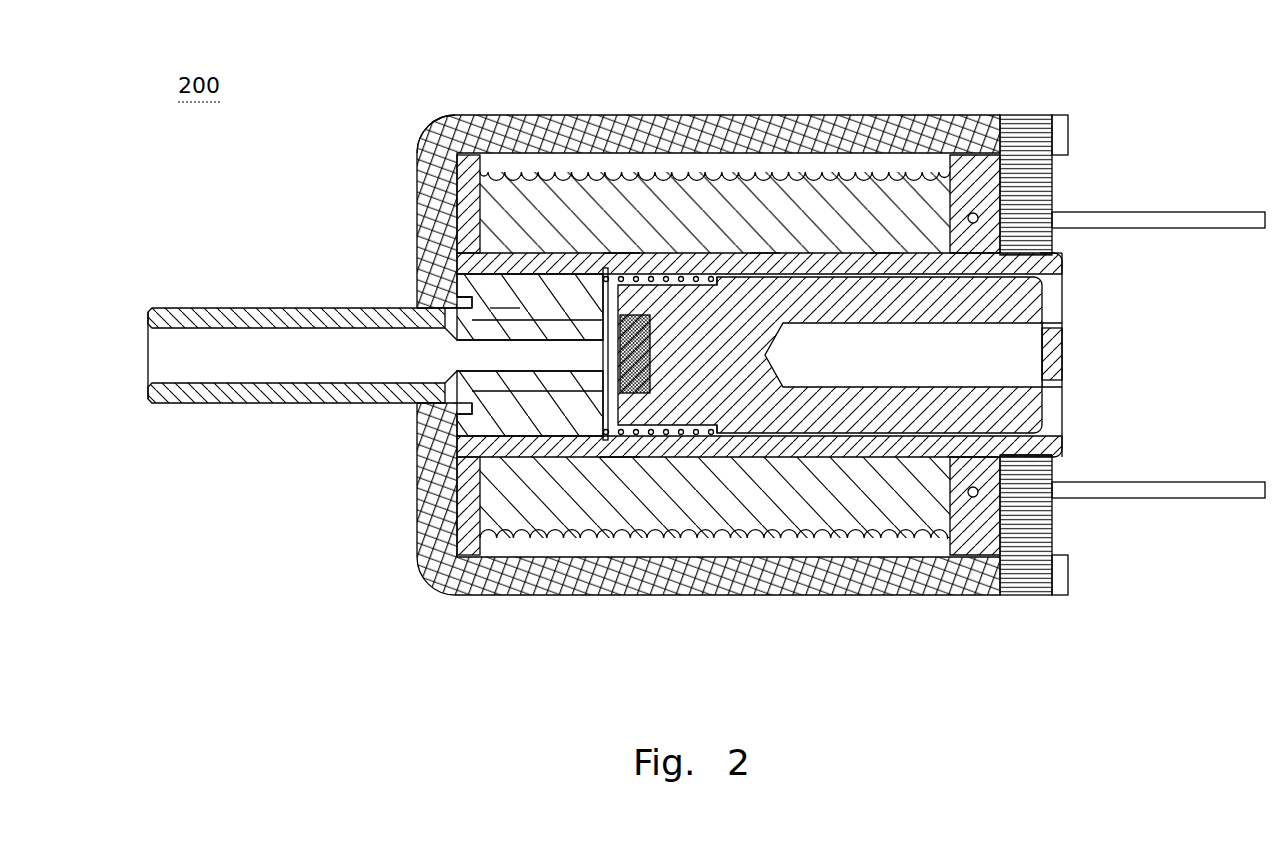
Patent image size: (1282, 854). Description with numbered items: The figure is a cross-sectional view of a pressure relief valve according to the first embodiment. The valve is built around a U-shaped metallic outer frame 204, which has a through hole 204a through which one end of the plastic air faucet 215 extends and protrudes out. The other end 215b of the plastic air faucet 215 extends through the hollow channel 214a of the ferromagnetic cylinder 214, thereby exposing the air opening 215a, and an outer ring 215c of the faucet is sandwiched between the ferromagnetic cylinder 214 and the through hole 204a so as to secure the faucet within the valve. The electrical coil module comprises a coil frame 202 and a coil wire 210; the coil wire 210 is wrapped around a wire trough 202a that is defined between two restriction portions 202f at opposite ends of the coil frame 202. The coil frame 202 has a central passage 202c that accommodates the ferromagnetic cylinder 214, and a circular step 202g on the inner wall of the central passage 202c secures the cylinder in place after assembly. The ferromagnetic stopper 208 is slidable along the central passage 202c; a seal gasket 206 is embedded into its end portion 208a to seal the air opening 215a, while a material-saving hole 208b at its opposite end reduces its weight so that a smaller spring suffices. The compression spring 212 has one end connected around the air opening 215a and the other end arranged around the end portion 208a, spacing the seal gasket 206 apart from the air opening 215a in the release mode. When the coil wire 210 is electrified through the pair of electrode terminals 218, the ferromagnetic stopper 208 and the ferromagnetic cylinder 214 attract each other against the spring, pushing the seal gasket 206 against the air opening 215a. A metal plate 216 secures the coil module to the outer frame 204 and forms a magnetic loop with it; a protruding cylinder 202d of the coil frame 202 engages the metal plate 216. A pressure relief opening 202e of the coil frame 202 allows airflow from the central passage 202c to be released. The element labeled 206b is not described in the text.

The coil frame 202 is at (982, 520).
The wire trough 202a is at (883, 247).
The central passage 202c is at (763, 253).
The protruding cylinder 202d is at (1062, 262).
The pressure relief opening 202e is at (1065, 295).
The restriction portions 202f is at (447, 118).
The circular step 202g is at (613, 250).
The outer frame 204 is at (897, 575).
The through hole 204a is at (445, 292).
The seal gasket 206 is at (617, 457).
The terminal holder 206b is at (1052, 468).
The ferromagnetic stopper 208 is at (785, 417).
The end portion 208a is at (710, 432).
The material-saving hole 208b is at (1010, 355).
The coil wire 210 is at (835, 510).
The spring 212 is at (633, 400).
The ferromagnetic cylinder 214 is at (495, 445).
The hollow channel 214a is at (470, 440).
The plastic air faucet 215 is at (205, 395).
The air opening 215a is at (505, 310).
The other end 215b is at (472, 300).
The outer ring 215c is at (453, 300).
The metal plate 216 is at (1027, 540).
The electrode terminals 218 is at (1165, 498).